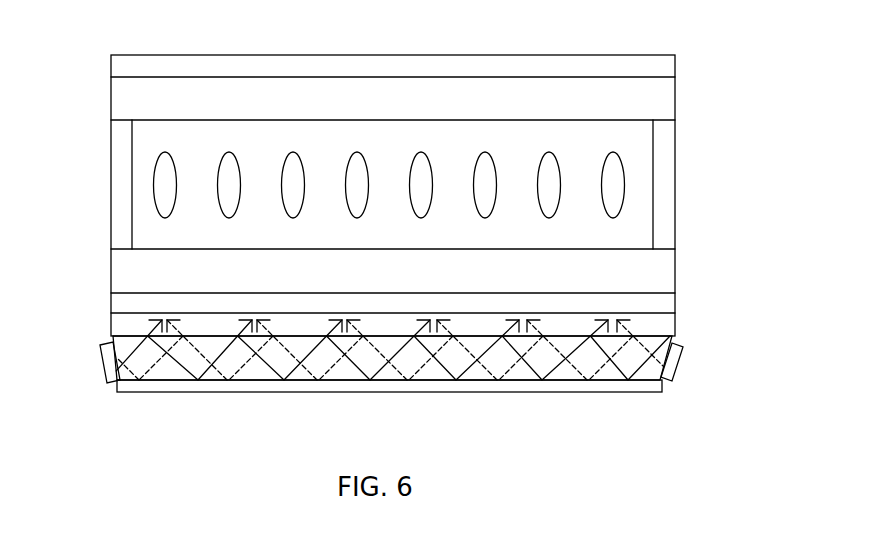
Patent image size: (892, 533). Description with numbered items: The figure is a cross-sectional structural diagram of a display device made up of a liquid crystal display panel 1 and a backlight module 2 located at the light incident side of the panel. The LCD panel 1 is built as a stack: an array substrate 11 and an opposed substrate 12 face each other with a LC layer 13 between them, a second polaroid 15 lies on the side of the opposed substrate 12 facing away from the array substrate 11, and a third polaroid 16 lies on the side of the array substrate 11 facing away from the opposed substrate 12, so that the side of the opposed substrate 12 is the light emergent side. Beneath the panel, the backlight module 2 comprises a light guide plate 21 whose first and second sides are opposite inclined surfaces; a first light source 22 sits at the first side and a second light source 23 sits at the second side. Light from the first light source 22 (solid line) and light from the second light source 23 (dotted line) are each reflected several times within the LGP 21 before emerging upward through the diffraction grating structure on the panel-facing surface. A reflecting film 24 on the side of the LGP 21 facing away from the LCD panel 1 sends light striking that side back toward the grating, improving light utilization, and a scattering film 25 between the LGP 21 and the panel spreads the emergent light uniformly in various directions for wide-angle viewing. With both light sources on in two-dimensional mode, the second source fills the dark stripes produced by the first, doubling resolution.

The liquid crystal display panel 1 is at (48, 55).
The backlight module 2 is at (47, 312).
The array substrate 11 is at (627, 272).
The opposed substrate 12 is at (627, 99).
The LC layer 13 is at (218, 185).
The second polaroid 15 is at (483, 65).
The third polaroid 16 is at (123, 300).
The light guide plate 21 is at (257, 372).
The first light source 22 is at (107, 365).
The second light source 23 is at (677, 363).
The reflecting film 24 is at (415, 392).
The scattering film 25 is at (658, 323).